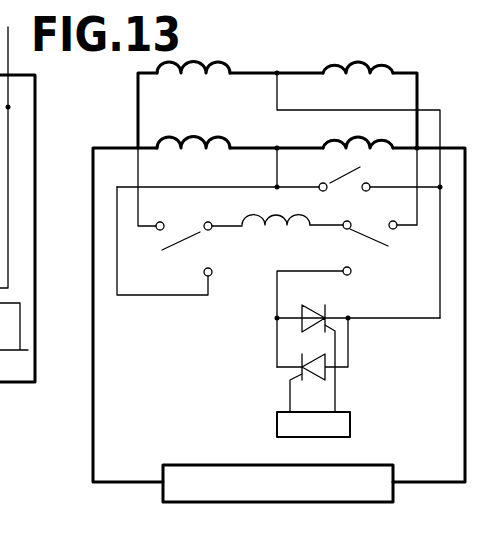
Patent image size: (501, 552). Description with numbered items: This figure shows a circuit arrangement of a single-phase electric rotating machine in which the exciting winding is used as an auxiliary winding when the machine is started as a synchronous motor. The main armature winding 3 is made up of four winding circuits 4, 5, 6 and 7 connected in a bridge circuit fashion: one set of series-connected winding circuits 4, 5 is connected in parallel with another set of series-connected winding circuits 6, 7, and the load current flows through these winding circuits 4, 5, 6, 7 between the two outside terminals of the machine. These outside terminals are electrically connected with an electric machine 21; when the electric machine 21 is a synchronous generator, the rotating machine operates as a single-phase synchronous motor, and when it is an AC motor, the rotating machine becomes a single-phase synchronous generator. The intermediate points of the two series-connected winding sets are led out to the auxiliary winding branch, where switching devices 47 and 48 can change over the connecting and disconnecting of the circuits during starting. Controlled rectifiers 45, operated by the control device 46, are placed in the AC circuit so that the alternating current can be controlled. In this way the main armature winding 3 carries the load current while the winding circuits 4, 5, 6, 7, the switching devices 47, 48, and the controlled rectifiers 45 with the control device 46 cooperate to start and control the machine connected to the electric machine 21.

The main armature winding 3 is at (252, 122).
The winding circuit 4 is at (189, 76).
The winding circuit 5 is at (377, 78).
The winding circuit 6 is at (187, 141).
The winding circuit 7 is at (331, 142).
The electric machine 21 is at (163, 504).
The controlled rectifiers 45 is at (345, 358).
The control device 46 is at (277, 426).
The switching device 47 is at (164, 241).
The switching device 48 is at (322, 307).